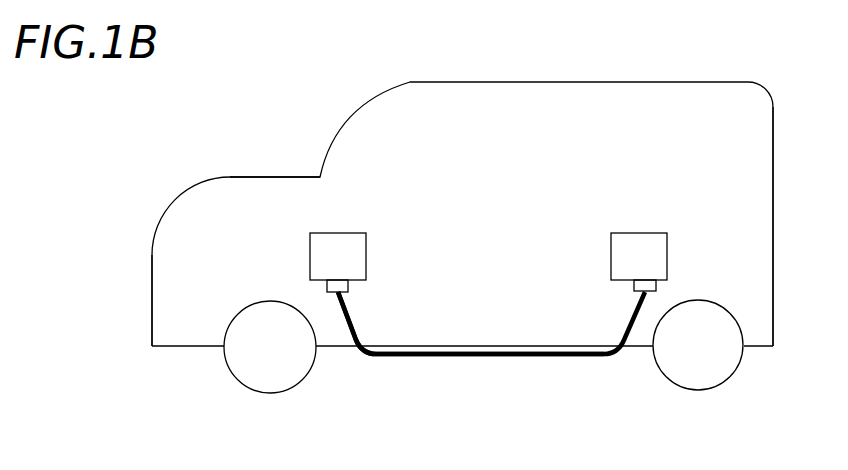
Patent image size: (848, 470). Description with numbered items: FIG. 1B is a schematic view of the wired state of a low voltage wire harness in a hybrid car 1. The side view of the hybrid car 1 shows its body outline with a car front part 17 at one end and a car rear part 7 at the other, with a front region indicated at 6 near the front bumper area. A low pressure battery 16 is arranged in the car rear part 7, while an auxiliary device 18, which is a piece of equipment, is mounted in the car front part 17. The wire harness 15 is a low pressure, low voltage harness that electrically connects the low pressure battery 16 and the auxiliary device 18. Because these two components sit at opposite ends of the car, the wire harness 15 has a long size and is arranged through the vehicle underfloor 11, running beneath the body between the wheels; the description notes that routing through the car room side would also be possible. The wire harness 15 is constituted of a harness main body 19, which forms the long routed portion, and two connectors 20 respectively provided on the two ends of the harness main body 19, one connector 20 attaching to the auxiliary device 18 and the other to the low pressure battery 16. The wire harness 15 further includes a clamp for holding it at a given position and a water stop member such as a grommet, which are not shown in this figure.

The hybrid car 1 is at (621, 78).
The front portion of vehicle 6 is at (170, 320).
The car rear part 7 is at (755, 310).
The vehicle underfloor 11 is at (566, 348).
The wire harness 15 is at (397, 361).
The low pressure battery 16 is at (640, 239).
The car front part 17 is at (289, 190).
The auxiliary device 18 is at (351, 241).
The harness main body 19 is at (362, 331).
The connectors 20 is at (327, 286).